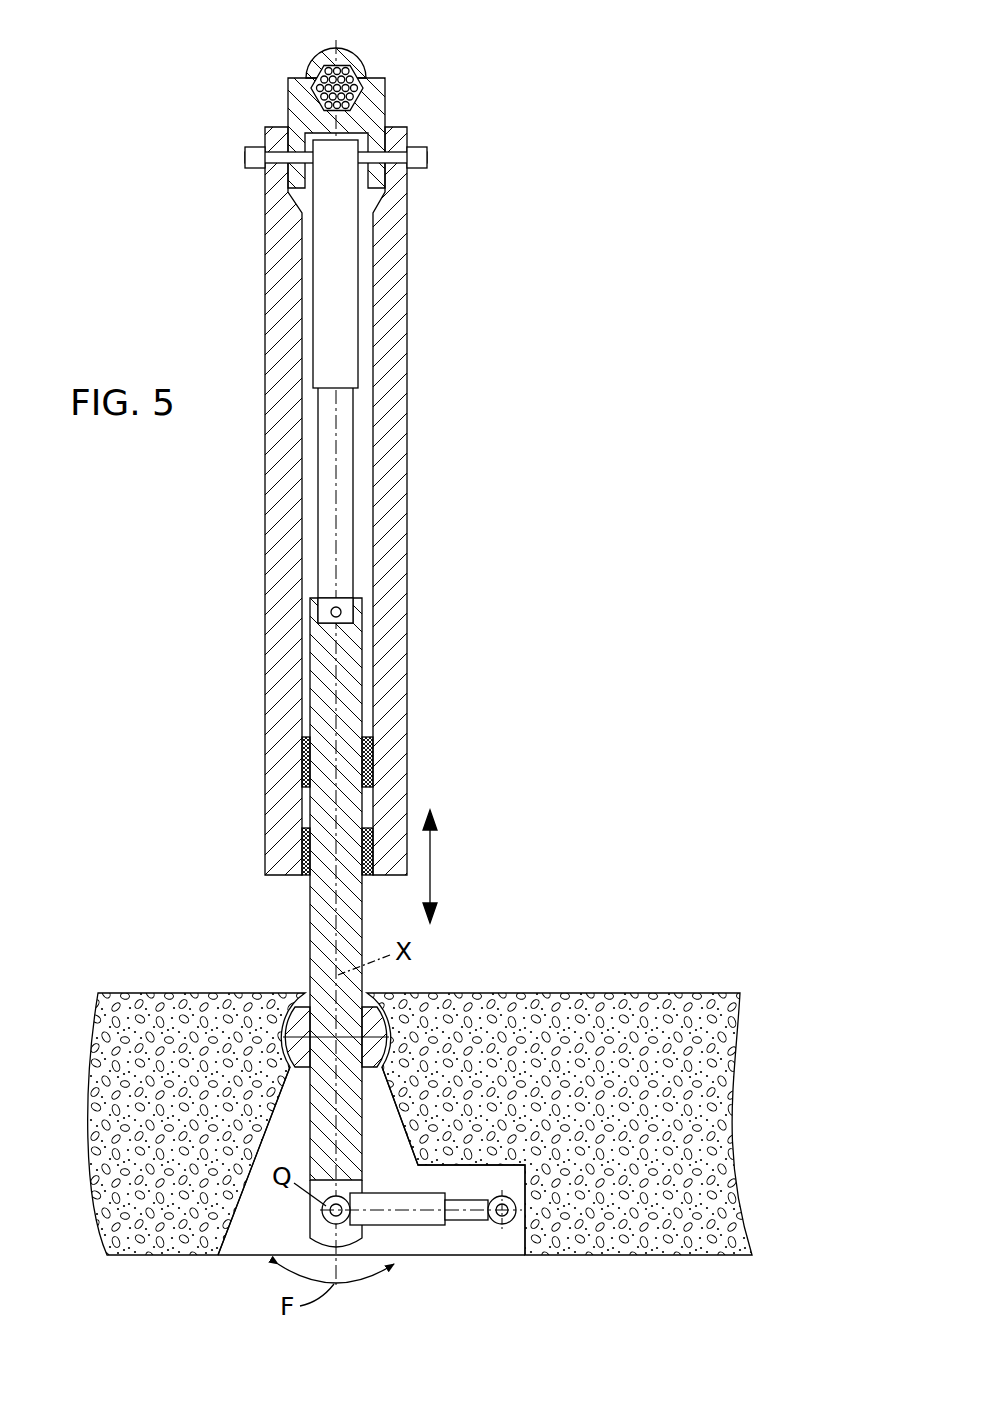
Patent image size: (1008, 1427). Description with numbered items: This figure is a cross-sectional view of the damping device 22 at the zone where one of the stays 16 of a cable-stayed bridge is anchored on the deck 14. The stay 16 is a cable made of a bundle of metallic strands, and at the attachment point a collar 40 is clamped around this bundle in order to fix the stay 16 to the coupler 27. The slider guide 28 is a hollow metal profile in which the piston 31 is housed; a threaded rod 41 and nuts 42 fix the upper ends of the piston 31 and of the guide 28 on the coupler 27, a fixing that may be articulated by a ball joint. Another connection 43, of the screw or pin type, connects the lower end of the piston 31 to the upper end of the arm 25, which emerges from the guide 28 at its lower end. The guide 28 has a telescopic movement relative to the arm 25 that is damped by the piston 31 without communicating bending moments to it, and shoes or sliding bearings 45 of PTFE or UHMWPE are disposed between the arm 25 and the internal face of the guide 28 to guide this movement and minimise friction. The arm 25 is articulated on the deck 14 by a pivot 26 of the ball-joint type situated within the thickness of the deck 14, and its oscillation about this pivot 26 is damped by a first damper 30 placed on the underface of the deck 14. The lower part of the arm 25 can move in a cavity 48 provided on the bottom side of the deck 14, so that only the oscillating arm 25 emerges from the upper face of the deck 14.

The deck 14 is at (567, 1003).
The stay 16 is at (322, 75).
The damping device 22 is at (150, 693).
The arm 25 is at (317, 933).
The pivot 26 is at (296, 1012).
The coupler 27 is at (378, 106).
The slider guide 28 is at (393, 472).
The first damper 30 is at (420, 1218).
The piston 31 is at (347, 357).
The collar 40 is at (352, 76).
The threaded rod 41 is at (428, 156).
The nuts 42 is at (257, 169).
The connection 43 is at (341, 610).
The shoes or sliding bearings 45 is at (302, 765).
The cavity 48 is at (258, 1237).